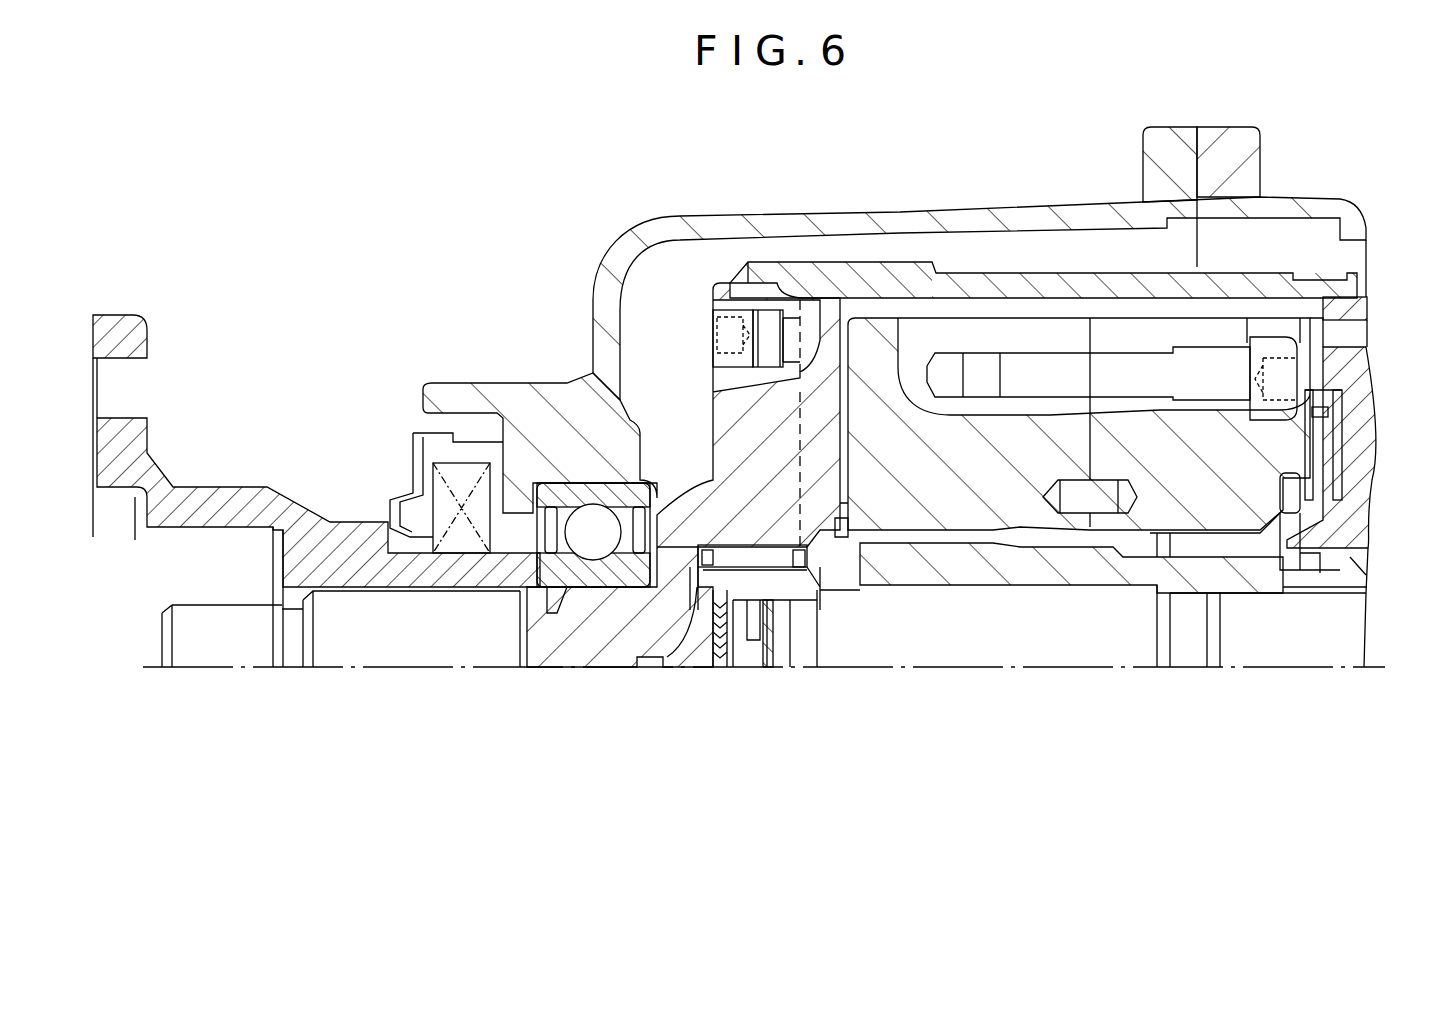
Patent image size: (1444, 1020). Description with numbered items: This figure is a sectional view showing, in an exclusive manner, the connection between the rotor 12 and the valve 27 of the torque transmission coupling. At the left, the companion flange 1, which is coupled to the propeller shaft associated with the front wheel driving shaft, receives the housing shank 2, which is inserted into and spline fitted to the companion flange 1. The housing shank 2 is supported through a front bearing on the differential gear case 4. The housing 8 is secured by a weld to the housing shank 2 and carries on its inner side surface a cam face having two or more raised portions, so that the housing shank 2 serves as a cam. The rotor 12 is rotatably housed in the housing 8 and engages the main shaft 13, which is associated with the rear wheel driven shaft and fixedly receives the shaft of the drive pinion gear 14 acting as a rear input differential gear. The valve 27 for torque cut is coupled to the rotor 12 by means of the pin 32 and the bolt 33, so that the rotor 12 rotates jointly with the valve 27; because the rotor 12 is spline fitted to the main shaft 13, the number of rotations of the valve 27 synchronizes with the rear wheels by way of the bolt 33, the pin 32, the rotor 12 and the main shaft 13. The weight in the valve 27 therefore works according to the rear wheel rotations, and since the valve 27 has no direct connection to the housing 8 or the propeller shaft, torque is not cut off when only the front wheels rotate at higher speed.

The companion flange 1 is at (212, 495).
The housing shank 2 is at (584, 662).
The differential gear case 4 is at (656, 232).
The housing 8 is at (913, 278).
The rotor 12 is at (910, 488).
The main shaft 13 is at (1100, 563).
The drive pinion gear 14 is at (1337, 633).
The valve 27 is at (1227, 540).
The pin 32 is at (1100, 484).
The bolt 33 is at (1215, 357).